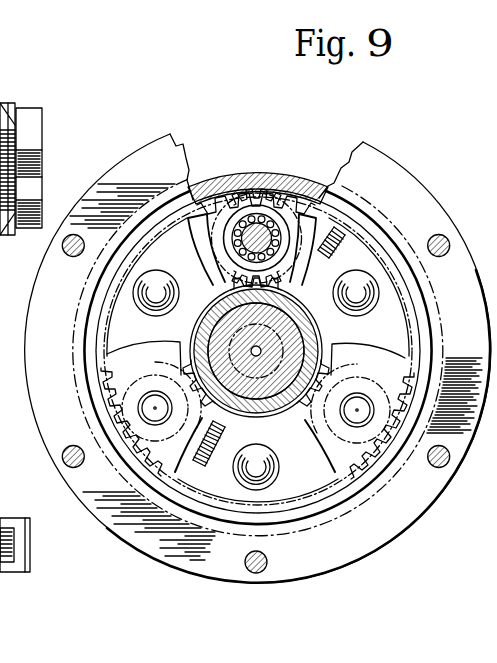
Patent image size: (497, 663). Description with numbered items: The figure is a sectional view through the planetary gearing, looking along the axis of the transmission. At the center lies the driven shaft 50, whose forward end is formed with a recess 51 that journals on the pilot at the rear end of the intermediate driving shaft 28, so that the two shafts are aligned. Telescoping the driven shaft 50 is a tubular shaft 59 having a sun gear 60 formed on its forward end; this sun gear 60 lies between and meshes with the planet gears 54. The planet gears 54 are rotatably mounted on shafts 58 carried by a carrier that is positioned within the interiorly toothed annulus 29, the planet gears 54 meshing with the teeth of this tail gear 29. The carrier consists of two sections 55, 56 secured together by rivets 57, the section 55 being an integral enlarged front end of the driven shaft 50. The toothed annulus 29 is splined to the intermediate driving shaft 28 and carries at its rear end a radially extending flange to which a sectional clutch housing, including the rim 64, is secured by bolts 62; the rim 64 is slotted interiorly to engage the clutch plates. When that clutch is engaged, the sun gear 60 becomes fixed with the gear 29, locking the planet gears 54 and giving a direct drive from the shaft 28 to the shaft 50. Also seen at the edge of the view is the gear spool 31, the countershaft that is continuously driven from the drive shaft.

The intermediate driving shaft 28 is at (334, 331).
The toothed annulus 29 is at (280, 178).
The gear spool 31 is at (53, 312).
The driven shaft 50 is at (181, 475).
The recess 51 is at (303, 279).
The planet gears 54 is at (110, 412).
The carrier section 55 is at (317, 198).
The carrier section 56 is at (107, 354).
The rivets 57 is at (153, 282).
The shafts 58 is at (151, 378).
The tubular shaft 59 is at (260, 412).
The sun gear 60 is at (282, 427).
The bolts 62 is at (445, 235).
The rim 64 is at (240, 212).